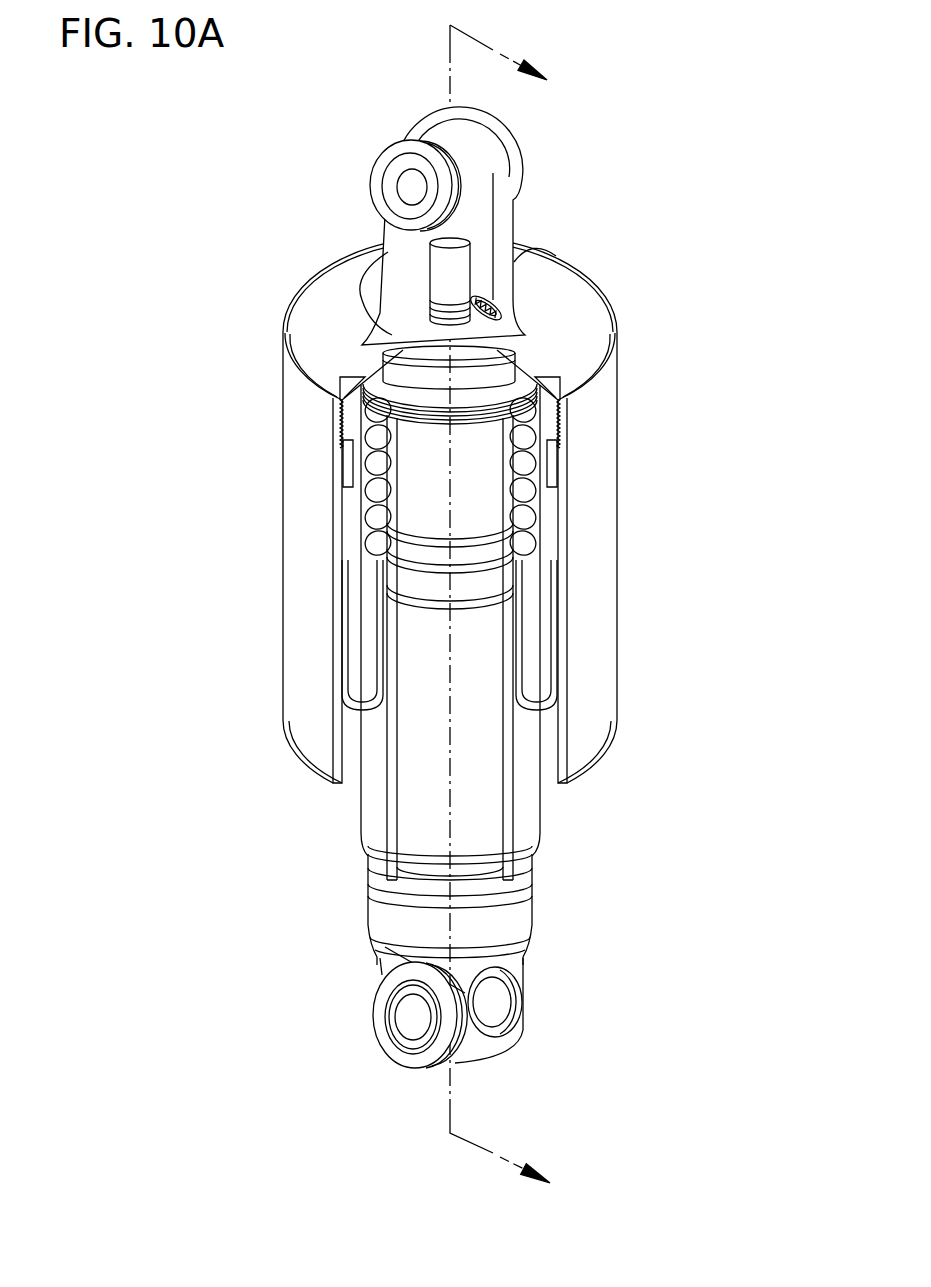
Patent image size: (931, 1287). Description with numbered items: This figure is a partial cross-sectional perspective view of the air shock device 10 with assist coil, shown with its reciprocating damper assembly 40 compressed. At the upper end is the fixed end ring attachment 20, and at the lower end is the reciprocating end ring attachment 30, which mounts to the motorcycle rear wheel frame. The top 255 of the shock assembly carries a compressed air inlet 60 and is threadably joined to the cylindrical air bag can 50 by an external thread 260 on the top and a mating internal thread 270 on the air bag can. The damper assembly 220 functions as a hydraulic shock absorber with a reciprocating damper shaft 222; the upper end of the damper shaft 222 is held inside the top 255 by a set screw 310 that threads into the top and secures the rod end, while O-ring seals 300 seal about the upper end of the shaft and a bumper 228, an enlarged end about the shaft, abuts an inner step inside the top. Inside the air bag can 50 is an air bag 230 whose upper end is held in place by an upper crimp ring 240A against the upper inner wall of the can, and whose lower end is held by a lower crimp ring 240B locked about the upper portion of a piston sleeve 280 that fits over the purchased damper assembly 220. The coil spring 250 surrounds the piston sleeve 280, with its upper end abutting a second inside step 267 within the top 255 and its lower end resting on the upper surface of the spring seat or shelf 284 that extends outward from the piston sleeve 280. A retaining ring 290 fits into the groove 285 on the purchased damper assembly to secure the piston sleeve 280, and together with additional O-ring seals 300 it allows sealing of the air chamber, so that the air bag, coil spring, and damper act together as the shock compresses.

The shock device with assist coil 10 is at (698, 204).
The fixed end ring attachment 20 is at (413, 190).
The reciprocating end ring attachment 30 is at (405, 1022).
The reciprocating damper assembly 40 is at (606, 870).
The air bag can 50 is at (597, 440).
The compressed air inlet 60 is at (573, 267).
The damper assembly 220 is at (344, 926).
The damper shaft 222 is at (440, 277).
The bumper 228 is at (405, 352).
The air bag 230 is at (555, 533).
The upper crimp ring 240A is at (557, 467).
The lower crimp ring 240B is at (547, 600).
The coil spring 250 is at (547, 567).
The top of shock assembly 255 is at (590, 340).
The external thread on top of shock 260 is at (385, 352).
The second inside step 267 is at (540, 352).
The internal thread on air bag can 270 is at (352, 398).
The piston sleeve 280 is at (525, 797).
The spring seat/shelf 284 is at (422, 568).
The groove in purchased damper assembly for retaining ring 285 is at (393, 470).
The retaining ring 290 is at (418, 408).
The O-ring seals 300 is at (405, 563).
The set screw 310 is at (480, 307).